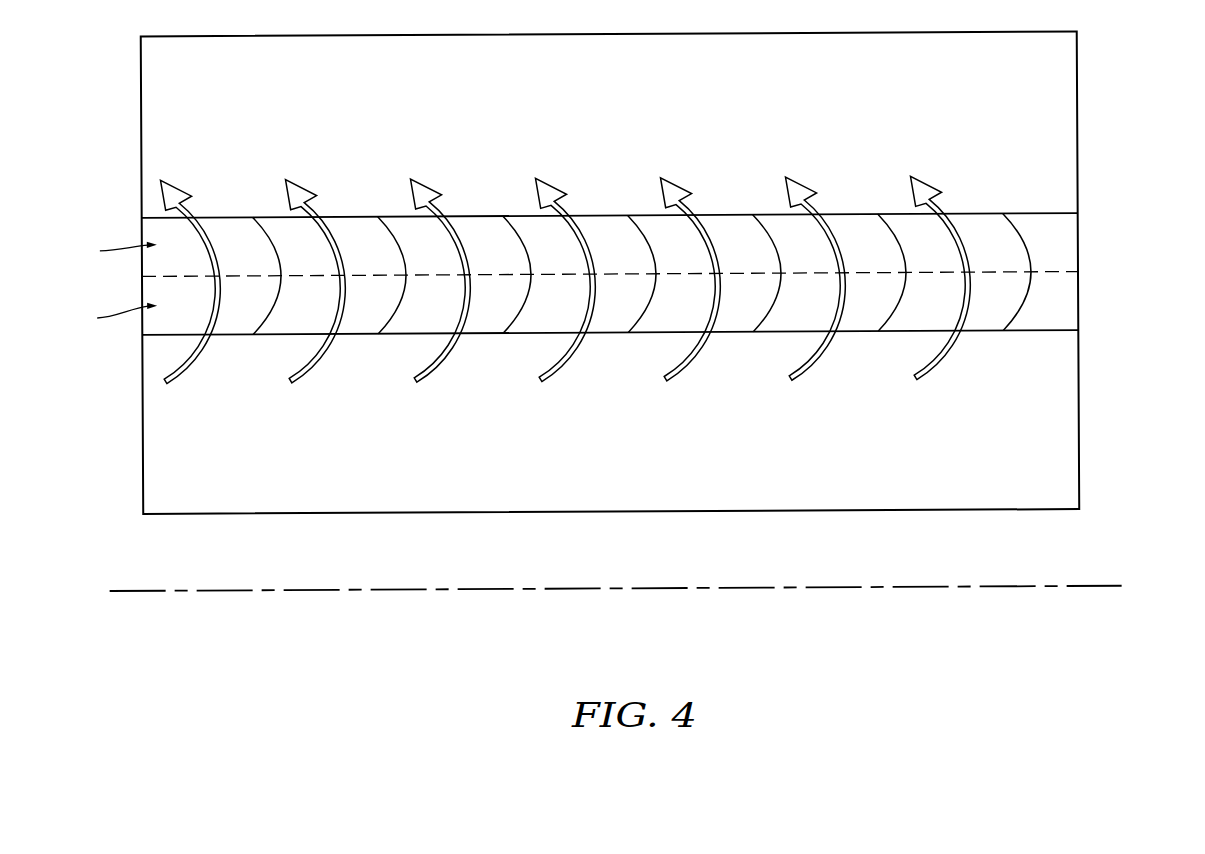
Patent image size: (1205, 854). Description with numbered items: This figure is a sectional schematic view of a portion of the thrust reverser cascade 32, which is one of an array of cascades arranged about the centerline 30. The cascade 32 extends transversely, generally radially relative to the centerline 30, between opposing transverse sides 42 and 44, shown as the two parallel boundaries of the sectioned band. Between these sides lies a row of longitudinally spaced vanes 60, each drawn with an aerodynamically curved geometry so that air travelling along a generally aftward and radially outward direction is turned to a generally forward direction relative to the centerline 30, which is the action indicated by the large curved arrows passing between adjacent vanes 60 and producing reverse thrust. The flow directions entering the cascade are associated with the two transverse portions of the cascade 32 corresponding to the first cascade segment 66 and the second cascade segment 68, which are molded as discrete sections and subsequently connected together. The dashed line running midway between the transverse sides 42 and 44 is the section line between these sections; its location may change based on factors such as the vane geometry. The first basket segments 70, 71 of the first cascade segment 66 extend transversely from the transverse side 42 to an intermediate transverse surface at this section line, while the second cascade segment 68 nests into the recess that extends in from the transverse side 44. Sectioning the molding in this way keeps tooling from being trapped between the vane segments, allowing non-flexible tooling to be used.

The centerline 30 is at (148, 590).
The thrust reverser cascade 32 is at (1067, 237).
The transverse side 42 is at (1063, 332).
The transverse side 44 is at (1048, 215).
The vanes 60 is at (268, 313).
The first cascade segment 66 is at (111, 318).
The second cascade segment 68 is at (111, 250).
The first basket segment 70 is at (670, 289).
The first basket segment 71 is at (610, 274).